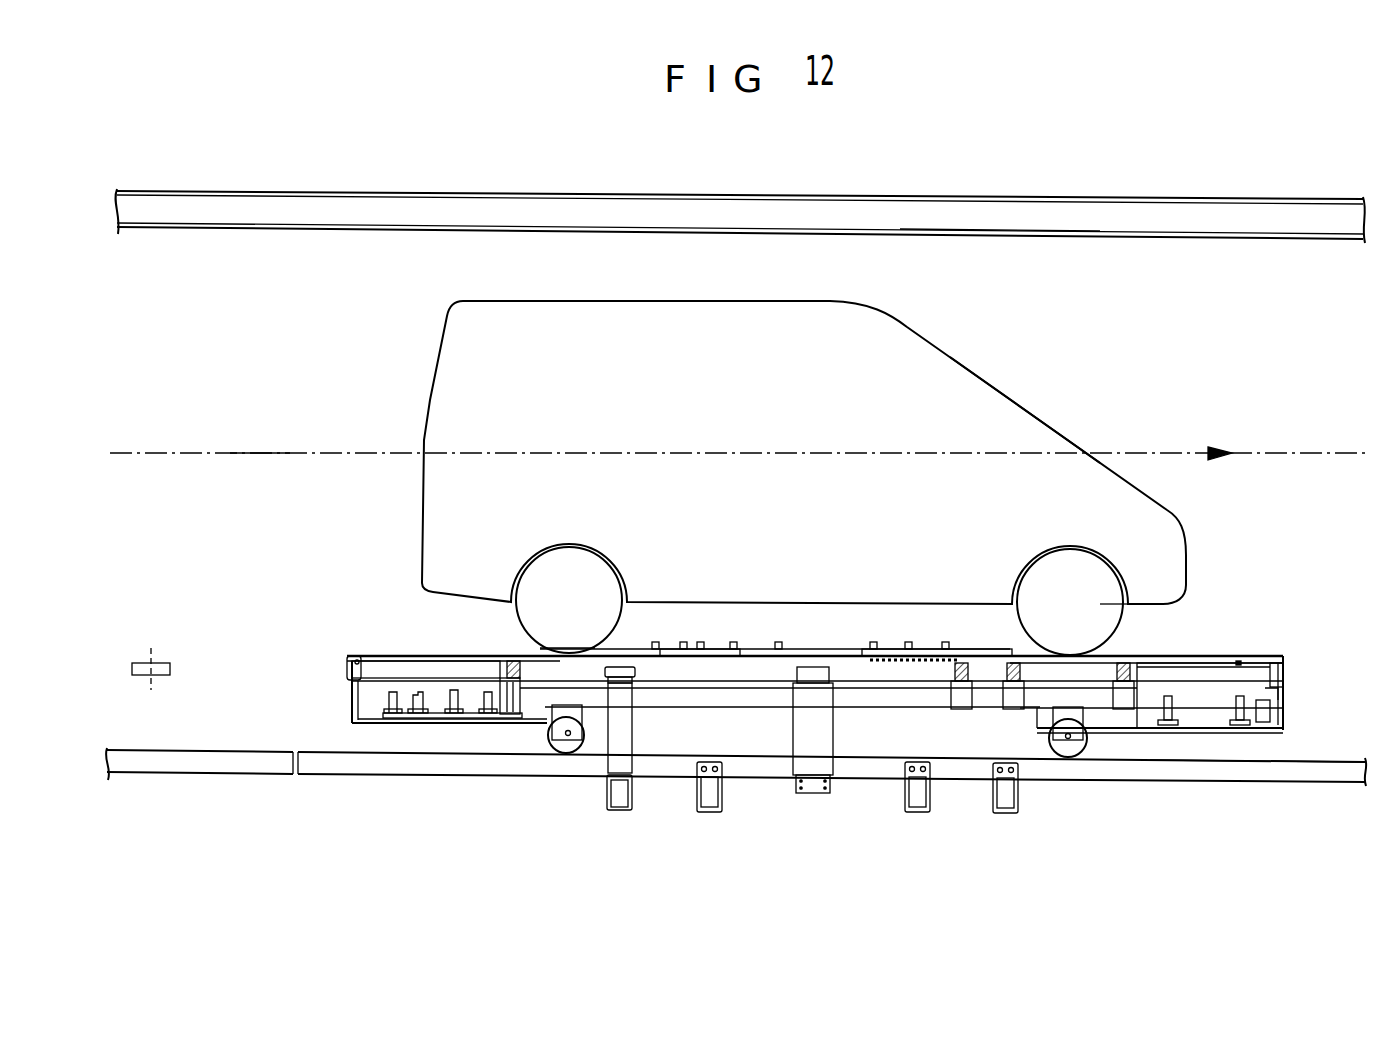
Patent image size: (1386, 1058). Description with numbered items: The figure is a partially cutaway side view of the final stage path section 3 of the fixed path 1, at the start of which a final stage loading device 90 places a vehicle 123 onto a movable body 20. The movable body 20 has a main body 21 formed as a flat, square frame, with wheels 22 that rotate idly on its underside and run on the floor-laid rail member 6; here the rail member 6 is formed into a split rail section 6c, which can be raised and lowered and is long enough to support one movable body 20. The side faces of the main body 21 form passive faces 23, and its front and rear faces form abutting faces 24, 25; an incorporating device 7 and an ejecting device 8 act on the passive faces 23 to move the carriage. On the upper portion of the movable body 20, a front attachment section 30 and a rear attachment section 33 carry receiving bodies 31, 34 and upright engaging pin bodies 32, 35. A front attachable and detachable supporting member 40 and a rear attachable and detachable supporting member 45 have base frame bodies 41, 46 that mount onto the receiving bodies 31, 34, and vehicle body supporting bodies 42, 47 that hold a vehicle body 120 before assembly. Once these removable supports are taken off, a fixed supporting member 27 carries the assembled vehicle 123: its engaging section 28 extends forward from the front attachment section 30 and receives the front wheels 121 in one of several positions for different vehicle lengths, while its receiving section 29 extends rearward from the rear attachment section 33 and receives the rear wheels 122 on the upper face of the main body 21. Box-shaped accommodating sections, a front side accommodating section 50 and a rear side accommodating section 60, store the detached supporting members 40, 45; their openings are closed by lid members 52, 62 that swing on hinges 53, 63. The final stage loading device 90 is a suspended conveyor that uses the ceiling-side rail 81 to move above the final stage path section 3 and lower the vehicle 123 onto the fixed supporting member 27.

The fixed path 1 is at (173, 449).
The final stage path section 3 is at (256, 440).
The rail member 6 is at (175, 752).
The split rail section 6c is at (1215, 768).
The incorporating device 7 is at (162, 642).
The ejecting device 8 is at (620, 658).
The movable body 20 is at (1272, 645).
The main body 21 is at (686, 698).
The wheel 22 is at (1060, 760).
The passive face 23 is at (759, 655).
The abutting face 24 is at (1291, 672).
The abutting face 25 is at (344, 660).
The fixed supporting member 27 is at (1010, 647).
The engaging section 28 is at (1108, 604).
The receiving section 29 is at (562, 655).
The front attachment section 30 is at (925, 647).
The receiving body 31 is at (873, 655).
The engaging pin body 32 is at (909, 645).
The rear attachment section 33 is at (692, 647).
The receiving body 34 is at (781, 645).
The engaging pin body 35 is at (701, 645).
The front attachable and detachable supporting member 40 is at (1291, 700).
The base frame body 41 is at (1180, 725).
The vehicle body supporting body 42 is at (1262, 725).
The rear attachable and detachable supporting member 45 is at (435, 718).
The base frame body 46 is at (395, 723).
The vehicle body supporting body 47 is at (383, 655).
The front side accommodating section 50 is at (1208, 700).
The lid member 52 is at (1245, 660).
The hinge 53 is at (1284, 663).
The rear side accommodating section 60 is at (352, 700).
The lid member 62 is at (421, 655).
The hinge 63 is at (363, 658).
The ceiling-side rail 81 is at (538, 190).
The final stage loading device 90 is at (927, 184).
The vehicle body 120 is at (905, 340).
The front wheel 121 is at (1080, 552).
The rear wheel 122 is at (569, 565).
The vehicle 123 is at (1008, 395).